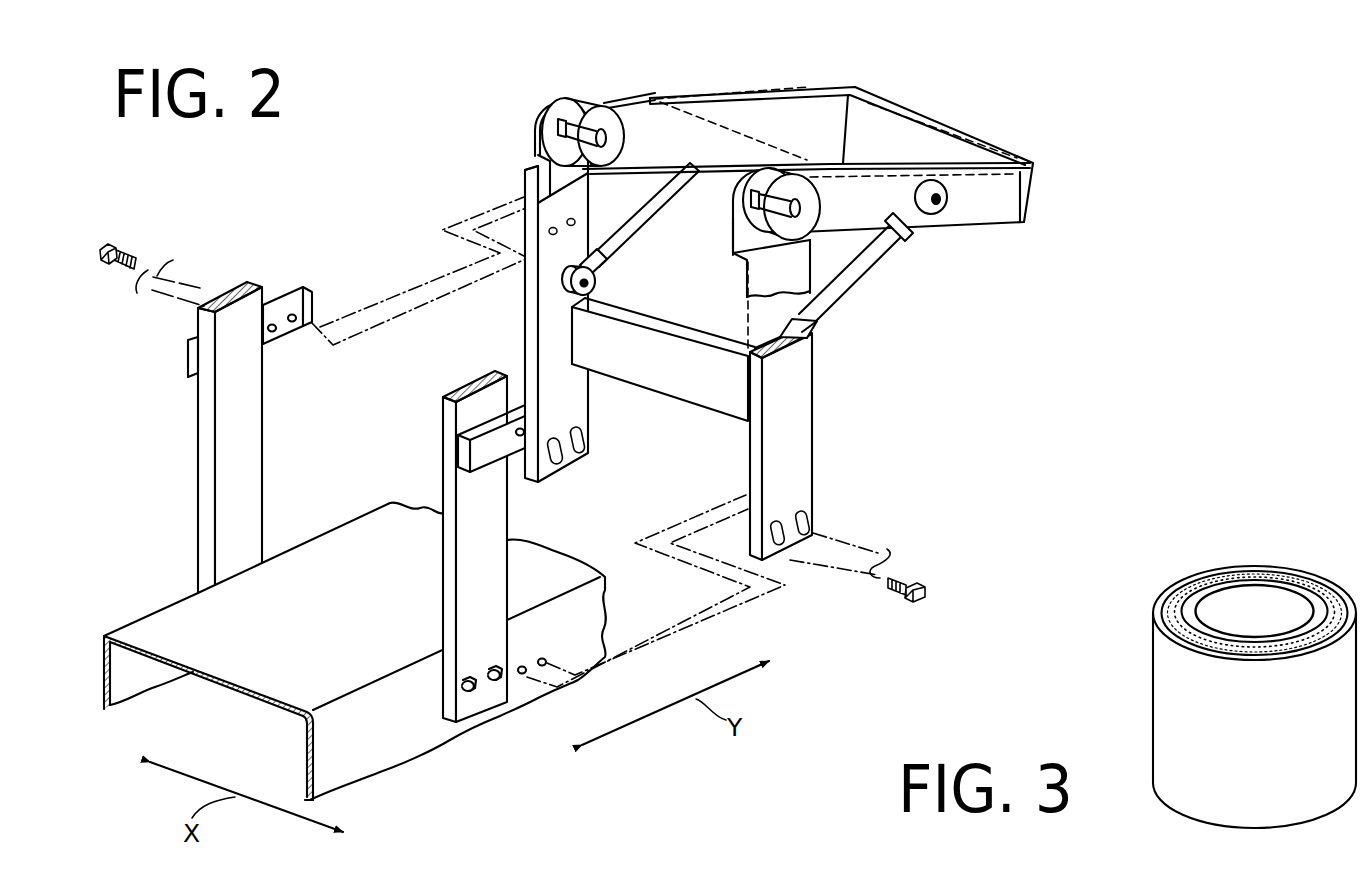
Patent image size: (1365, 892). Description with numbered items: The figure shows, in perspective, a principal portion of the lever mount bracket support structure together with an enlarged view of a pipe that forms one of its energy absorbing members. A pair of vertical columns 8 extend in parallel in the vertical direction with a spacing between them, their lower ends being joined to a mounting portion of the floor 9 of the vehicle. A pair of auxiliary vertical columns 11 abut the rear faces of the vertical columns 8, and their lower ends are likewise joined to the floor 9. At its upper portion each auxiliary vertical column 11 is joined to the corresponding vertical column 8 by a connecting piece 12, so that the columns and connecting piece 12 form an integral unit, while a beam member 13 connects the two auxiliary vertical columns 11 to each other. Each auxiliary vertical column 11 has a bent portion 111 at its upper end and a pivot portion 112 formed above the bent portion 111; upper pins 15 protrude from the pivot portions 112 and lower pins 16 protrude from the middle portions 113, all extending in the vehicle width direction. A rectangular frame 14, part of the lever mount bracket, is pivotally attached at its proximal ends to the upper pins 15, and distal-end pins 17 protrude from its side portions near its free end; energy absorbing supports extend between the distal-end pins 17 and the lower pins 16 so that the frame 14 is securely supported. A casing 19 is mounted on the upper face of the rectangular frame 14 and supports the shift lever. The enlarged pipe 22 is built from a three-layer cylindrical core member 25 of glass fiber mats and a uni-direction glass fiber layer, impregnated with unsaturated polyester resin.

In FIG. 2, the vertical columns 8 is at (200, 478).
In FIG. 2, the floor 9 is at (245, 692).
In FIG. 2, the auxiliary vertical columns 11 is at (602, 428).
In FIG. 2, the connecting piece 12 is at (272, 338).
In FIG. 2, the beam member 13 is at (655, 328).
In FIG. 2, the rectangular frame 14 is at (1003, 217).
In FIG. 2, the upper pins 15 is at (603, 128).
In FIG. 2, the lower pins 16 is at (568, 292).
In FIG. 2, the distal-end pins 17 is at (937, 214).
In FIG. 2, the casing 19 is at (746, 133).
In FIG. 3, the pipe 22 is at (1137, 692).
In FIG. 3, the three-layer cylindrical core member 25 is at (1333, 577).
In FIG. 2, the bent portion 111 is at (527, 170).
In FIG. 2, the pivot portion 112 is at (578, 100).
In FIG. 2, the middle portions 113 is at (527, 310).